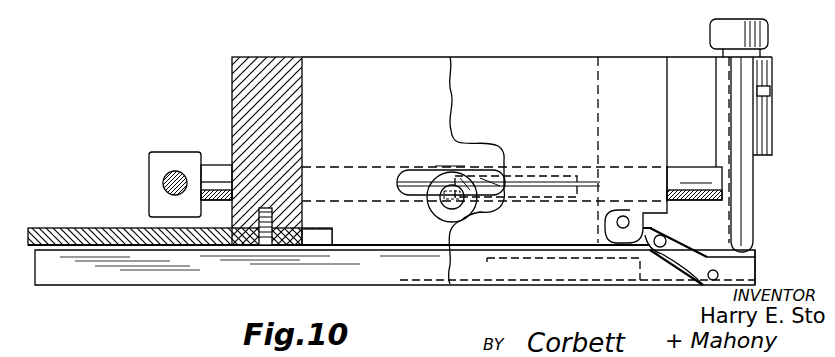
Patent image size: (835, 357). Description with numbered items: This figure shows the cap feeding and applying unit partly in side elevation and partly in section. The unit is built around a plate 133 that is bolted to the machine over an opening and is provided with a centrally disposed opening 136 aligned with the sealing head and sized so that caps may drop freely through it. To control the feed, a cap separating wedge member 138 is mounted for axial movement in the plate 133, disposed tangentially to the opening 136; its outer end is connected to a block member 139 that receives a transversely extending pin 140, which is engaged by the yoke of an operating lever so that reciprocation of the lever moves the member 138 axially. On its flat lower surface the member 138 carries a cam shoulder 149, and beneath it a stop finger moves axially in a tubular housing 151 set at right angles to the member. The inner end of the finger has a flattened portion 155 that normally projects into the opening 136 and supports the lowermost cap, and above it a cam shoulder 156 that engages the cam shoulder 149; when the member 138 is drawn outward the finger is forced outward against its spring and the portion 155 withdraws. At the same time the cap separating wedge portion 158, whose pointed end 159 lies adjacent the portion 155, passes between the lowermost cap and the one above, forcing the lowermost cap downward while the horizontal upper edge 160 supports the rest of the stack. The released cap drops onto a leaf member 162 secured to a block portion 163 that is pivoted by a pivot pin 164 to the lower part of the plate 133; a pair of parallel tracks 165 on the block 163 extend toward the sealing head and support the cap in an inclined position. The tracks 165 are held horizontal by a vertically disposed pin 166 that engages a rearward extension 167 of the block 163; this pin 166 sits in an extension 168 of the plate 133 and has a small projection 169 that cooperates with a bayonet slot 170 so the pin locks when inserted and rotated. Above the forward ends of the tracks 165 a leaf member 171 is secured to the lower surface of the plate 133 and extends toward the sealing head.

The plate 133 is at (260, 56).
The centrally disposed opening 136 is at (352, 80).
The cap separating wedge member 138 is at (691, 177).
The block member 139 is at (188, 160).
The transversely extending pin 140 is at (164, 181).
The cam shoulder 149 is at (480, 216).
The tubular housing 151 is at (438, 165).
The flattened portion 155 is at (456, 190).
The cam shoulder 156 is at (397, 187).
The cap separating wedge portion 158 is at (494, 182).
The point 159 is at (465, 182).
The upper edge 160 is at (553, 175).
The leaf member 162 is at (540, 258).
The block portion 163 is at (648, 228).
The pivot pin 164 is at (623, 215).
The parallel tracks 165 is at (433, 263).
The vertically disposed pin 166 is at (754, 197).
The rearward extension 167 is at (745, 261).
The extension 168 is at (760, 135).
The small projection 169 is at (765, 91).
The bayonet slot 170 is at (768, 72).
The leaf member 171 is at (88, 236).